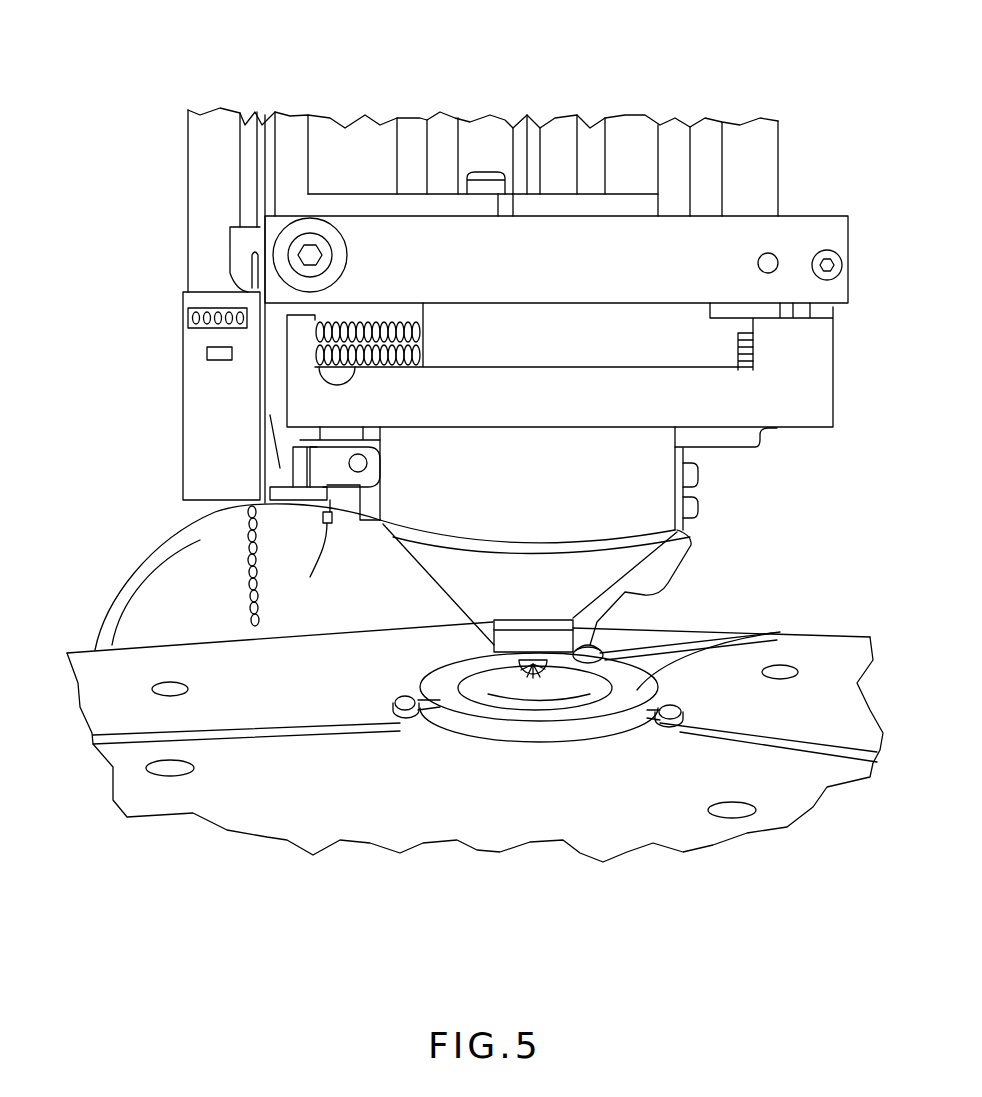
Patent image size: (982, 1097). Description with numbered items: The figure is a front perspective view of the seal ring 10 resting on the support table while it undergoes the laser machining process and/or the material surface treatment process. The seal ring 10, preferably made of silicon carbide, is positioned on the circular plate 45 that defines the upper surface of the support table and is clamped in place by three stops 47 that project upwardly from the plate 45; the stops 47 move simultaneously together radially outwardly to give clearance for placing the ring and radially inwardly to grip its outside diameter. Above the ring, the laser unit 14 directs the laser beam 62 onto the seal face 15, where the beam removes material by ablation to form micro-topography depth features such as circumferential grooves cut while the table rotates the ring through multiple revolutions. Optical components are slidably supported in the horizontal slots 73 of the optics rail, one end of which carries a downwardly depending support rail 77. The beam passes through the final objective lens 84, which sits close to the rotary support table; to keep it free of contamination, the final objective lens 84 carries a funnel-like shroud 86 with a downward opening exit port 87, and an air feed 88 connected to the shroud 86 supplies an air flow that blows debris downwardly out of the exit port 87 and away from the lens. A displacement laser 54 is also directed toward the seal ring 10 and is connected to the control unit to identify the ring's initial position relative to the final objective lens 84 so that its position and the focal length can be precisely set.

The laser unit 14 is at (170, 133).
The horizontal slots 73 is at (442, 125).
The support rail 77 is at (747, 143).
The final objective lens 84 is at (817, 235).
The displacement laser 54 is at (182, 347).
The funnel-like shroud 86 is at (652, 488).
The exit port 87 is at (510, 638).
The laser beam 62 is at (518, 657).
The air feed 88 is at (120, 612).
The seal ring 10 is at (780, 633).
The stops 47 is at (663, 600).
The seal face 15 is at (420, 677).
The circular plate 45 is at (262, 813).